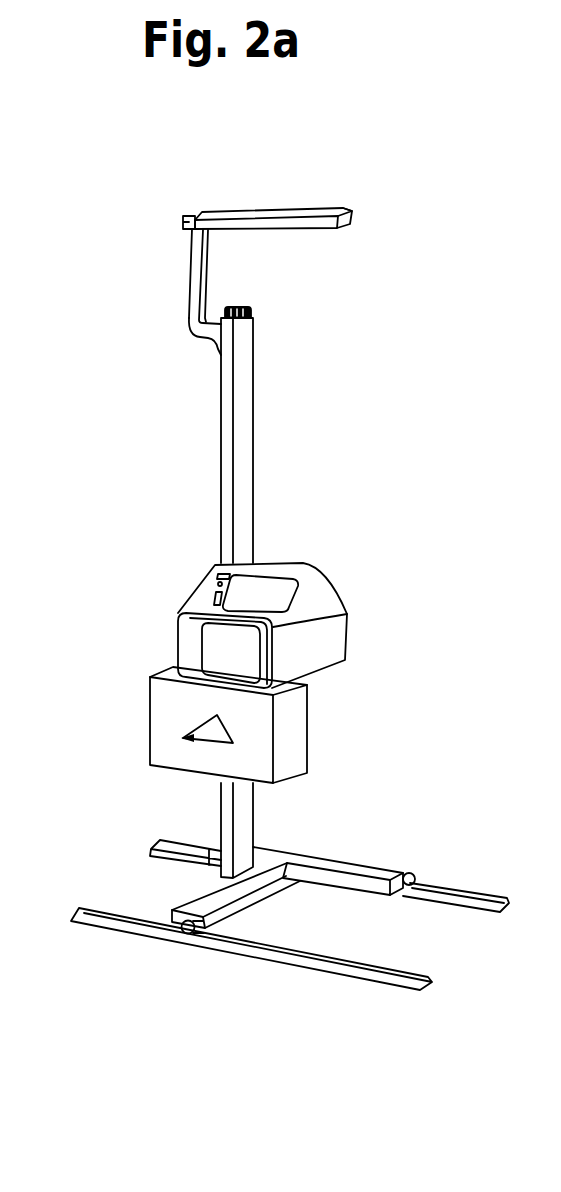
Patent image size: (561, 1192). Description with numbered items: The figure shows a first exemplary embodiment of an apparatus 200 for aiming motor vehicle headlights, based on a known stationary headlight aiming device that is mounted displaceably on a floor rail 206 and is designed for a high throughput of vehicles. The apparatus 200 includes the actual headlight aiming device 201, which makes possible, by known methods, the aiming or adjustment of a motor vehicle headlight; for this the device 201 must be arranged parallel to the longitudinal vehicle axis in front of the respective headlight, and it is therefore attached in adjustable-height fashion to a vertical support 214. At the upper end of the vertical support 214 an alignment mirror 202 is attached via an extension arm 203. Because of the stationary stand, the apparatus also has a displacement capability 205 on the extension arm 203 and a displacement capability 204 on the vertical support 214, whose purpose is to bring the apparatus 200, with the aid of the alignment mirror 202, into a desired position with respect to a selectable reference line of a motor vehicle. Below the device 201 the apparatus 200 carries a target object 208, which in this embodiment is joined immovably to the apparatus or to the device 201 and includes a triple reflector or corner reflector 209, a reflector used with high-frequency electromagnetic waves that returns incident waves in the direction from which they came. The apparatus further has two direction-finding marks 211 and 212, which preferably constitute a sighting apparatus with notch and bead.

The apparatus 200 is at (135, 190).
The headlight aiming device 201 is at (332, 590).
The alignment mirror 202 is at (287, 210).
The extension arm 203 is at (192, 278).
The displacement capability 204 is at (273, 288).
The displacement capability 205 is at (207, 346).
The floor rail 206 is at (455, 883).
The target object 208 is at (312, 731).
The corner reflector 209 is at (183, 738).
The direction-finding mark 211 is at (272, 573).
The direction-finding mark 212 is at (220, 607).
The vertical support 214 is at (253, 420).